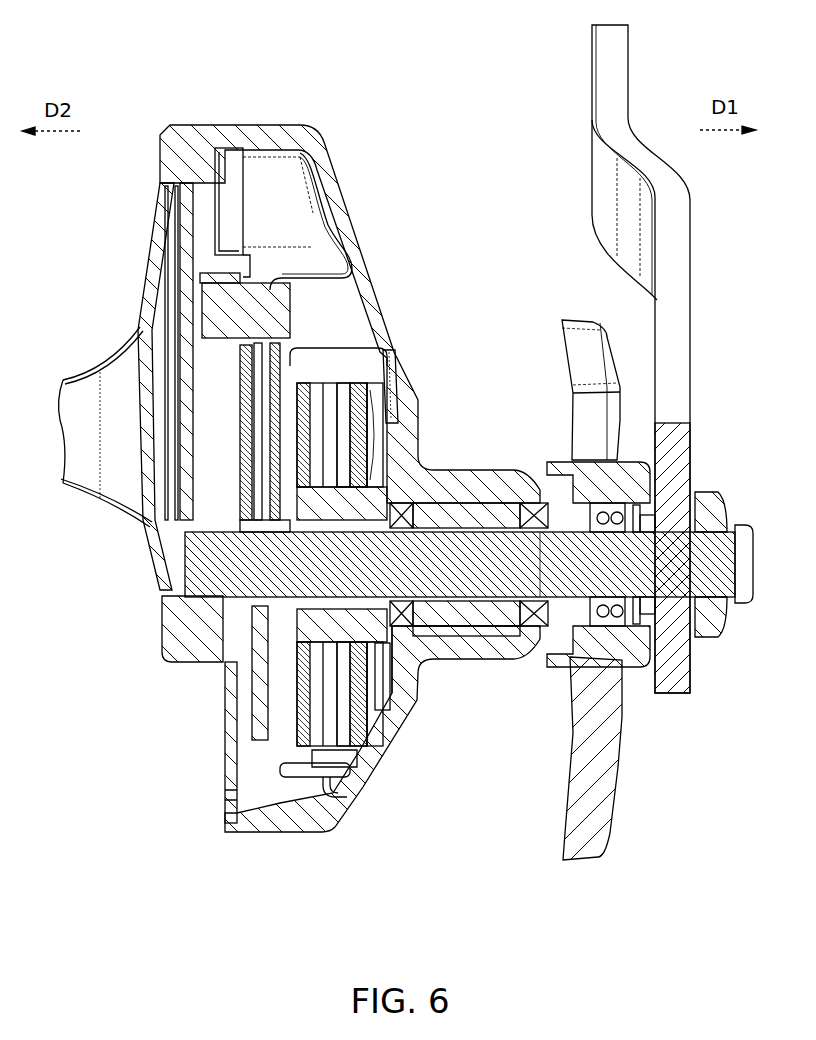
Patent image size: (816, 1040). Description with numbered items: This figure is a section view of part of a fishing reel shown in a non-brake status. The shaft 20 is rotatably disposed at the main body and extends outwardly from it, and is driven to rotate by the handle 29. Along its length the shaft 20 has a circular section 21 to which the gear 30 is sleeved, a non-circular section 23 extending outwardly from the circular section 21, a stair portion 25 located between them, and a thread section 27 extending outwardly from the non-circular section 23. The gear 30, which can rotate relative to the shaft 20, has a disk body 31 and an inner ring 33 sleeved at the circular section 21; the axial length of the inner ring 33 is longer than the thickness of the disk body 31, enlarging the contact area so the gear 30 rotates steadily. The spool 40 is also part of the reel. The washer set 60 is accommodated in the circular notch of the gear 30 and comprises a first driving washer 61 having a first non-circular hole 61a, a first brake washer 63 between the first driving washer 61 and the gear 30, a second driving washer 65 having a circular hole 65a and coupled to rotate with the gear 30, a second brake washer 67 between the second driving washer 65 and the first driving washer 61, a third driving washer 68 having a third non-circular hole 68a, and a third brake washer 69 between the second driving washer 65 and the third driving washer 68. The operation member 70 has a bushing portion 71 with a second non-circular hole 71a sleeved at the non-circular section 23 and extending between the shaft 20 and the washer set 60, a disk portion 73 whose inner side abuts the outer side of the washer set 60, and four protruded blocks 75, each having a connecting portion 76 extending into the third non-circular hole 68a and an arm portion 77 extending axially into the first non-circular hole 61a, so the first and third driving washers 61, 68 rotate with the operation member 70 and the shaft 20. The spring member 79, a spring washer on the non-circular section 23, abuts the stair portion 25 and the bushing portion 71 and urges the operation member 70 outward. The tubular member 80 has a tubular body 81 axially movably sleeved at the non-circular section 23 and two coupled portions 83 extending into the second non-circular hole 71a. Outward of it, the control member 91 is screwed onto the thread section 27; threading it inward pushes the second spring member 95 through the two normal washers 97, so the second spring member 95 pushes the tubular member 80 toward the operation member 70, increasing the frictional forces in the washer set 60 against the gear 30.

The shaft 20 is at (713, 567).
The circular section 21 is at (262, 660).
The non-circular section 23 is at (493, 633).
The stair portion 25 is at (258, 688).
The thread section 27 is at (658, 608).
The handle 29 is at (613, 45).
The gear 30 is at (335, 205).
The disk body 31 is at (290, 480).
The inner ring 33 is at (262, 533).
The spool 40 is at (88, 477).
The washer set 60 is at (408, 197).
The first driving washer 61 is at (273, 387).
The first non-circular hole 61a is at (258, 390).
The first brake washer 63 is at (297, 360).
The second driving washer 65 is at (323, 400).
The circular hole 65a is at (250, 307).
The second brake washer 67 is at (297, 390).
The third driving washer 68 is at (360, 407).
The third non-circular hole 68a is at (390, 400).
The third brake washer 69 is at (343, 400).
The operation member 70 is at (382, 768).
The bushing portion 71 is at (420, 667).
The second non-circular hole 71a is at (388, 498).
The disk portion 73 is at (433, 667).
The protruded blocks 75 is at (374, 779).
The connecting portion 76 is at (400, 690).
The arm portion 77 is at (352, 700).
The spring member 79 is at (310, 635).
The tubular member 80 is at (520, 524).
The tubular body 81 is at (493, 527).
The coupled portions 83 is at (462, 500).
The control member 91 is at (583, 337).
The second spring member 95 is at (575, 625).
The normal washers 97 is at (620, 672).